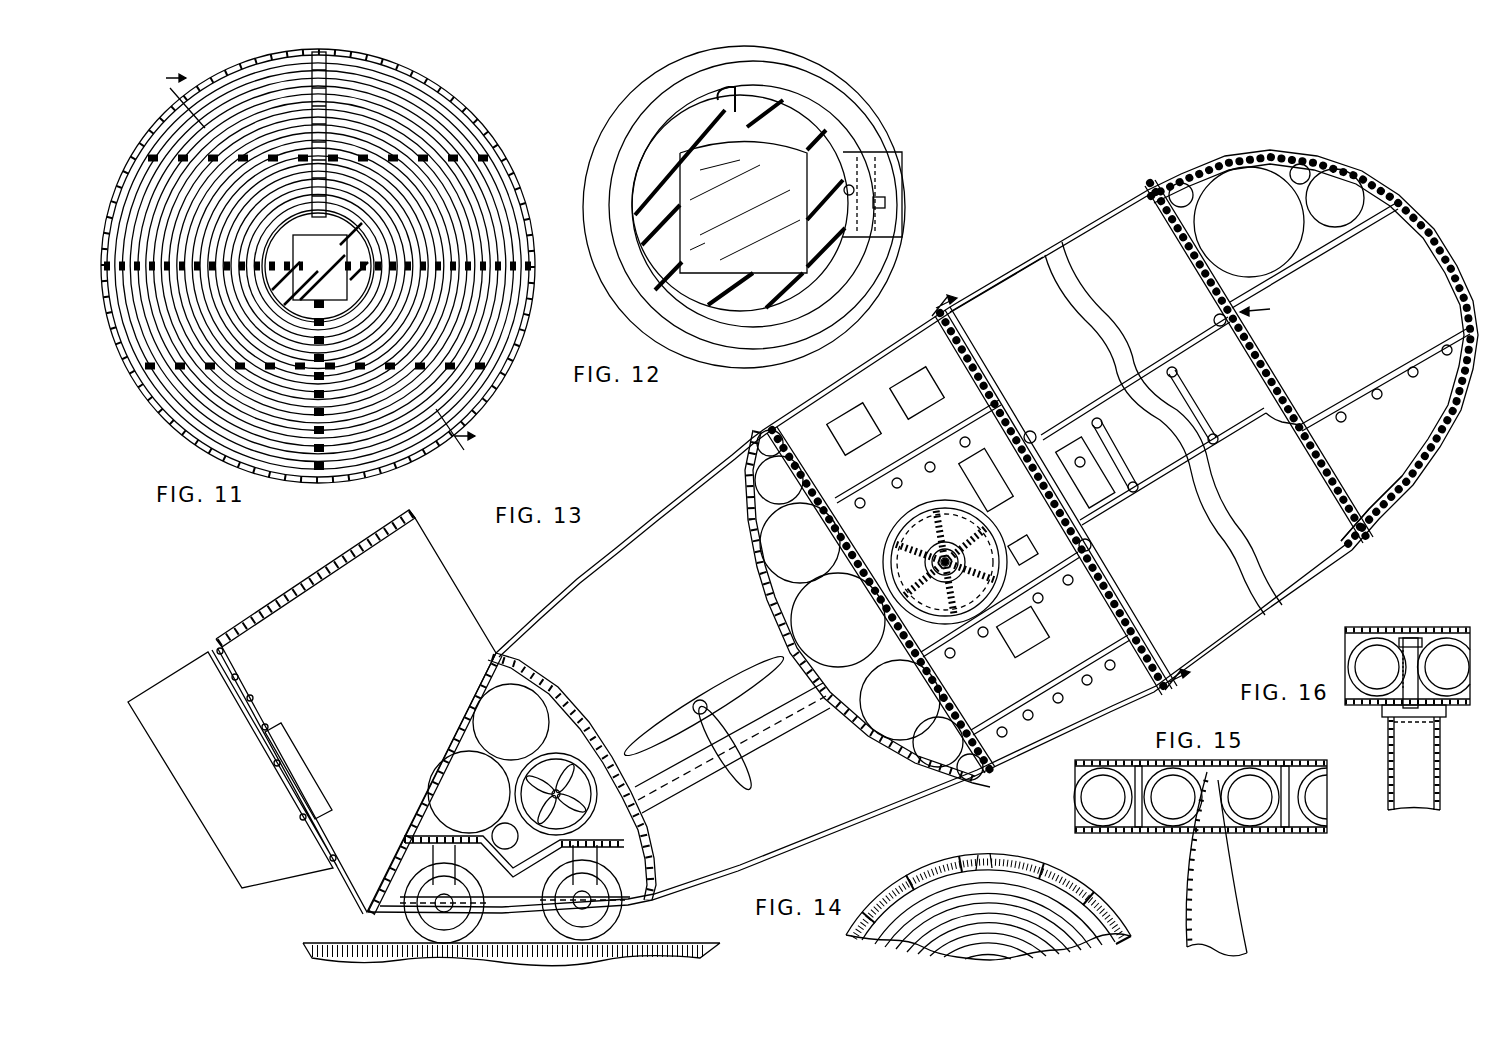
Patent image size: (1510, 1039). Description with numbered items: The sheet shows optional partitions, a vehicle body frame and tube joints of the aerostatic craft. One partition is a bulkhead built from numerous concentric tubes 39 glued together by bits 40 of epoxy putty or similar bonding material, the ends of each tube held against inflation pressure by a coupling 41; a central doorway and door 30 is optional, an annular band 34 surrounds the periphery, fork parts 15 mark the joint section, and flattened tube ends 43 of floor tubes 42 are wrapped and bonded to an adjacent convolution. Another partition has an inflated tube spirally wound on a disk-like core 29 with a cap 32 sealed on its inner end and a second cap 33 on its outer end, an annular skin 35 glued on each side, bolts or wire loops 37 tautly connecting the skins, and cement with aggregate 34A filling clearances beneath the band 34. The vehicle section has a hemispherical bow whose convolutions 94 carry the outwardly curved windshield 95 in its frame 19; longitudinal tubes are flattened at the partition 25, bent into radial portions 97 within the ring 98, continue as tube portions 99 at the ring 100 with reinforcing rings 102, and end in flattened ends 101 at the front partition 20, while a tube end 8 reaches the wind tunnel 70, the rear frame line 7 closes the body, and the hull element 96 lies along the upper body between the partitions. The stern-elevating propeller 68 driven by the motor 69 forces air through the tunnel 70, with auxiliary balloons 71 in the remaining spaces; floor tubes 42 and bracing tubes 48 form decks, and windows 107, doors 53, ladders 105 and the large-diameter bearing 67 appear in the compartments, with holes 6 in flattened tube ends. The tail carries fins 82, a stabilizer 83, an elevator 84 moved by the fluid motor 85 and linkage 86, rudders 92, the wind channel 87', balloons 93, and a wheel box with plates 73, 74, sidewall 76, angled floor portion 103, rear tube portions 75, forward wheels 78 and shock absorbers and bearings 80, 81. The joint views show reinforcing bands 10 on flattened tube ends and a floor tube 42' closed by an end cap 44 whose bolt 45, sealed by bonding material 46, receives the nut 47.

In FIG. 11, the annular band 34 is at (432, 82).
In FIG. 14, the annular band 34 is at (1062, 860).
In FIG. 11, the concentric tubes 39 is at (190, 425).
In FIG. 11, the coupling 41 is at (326, 62).
In FIG. 11, the doorway and door 30 is at (318, 266).
In FIG. 12, the doorway and door 30 is at (752, 250).
In FIG. 13, the doorway and door 30 is at (1090, 500).
In FIG. 11, the bits of bonding material 40 is at (150, 142).
In FIG. 11, the flattened tube ends 43 is at (462, 150).
In FIG. 11, the fork part 15 is at (336, 256).
In FIG. 12, the core 29 is at (852, 130).
In FIG. 12, the cap 32 is at (735, 87).
In FIG. 12, the annular skin 35 is at (900, 166).
In FIG. 12, the bolts or wire loops 37 is at (886, 203).
In FIG. 15, the bolts or wire loops 37 is at (1327, 788).
In FIG. 13, the tube end 8 is at (757, 428).
In FIG. 13, the windshield 95 is at (1458, 262).
In FIG. 13, the windshield frame 19 is at (1412, 228).
In FIG. 13, the convolutions 94 is at (1425, 500).
In FIG. 13, the upright plate 74 is at (640, 901).
In FIG. 13, the rear vehicle-frame line 7 is at (365, 912).
In FIG. 13, the rear portions of upper tubes 75 is at (398, 848).
In FIG. 13, the upright plate 73 is at (400, 836).
In FIG. 13, the balloons 93 is at (480, 801).
In FIG. 13, the wind channel 87' is at (511, 766).
In FIG. 13, the shock absorbers and bearings 80 is at (433, 858).
In FIG. 13, the angled portion 103 is at (573, 860).
In FIG. 13, the fore-and-aft sidewall 76 is at (520, 897).
In FIG. 13, the shock absorbers and bearings 81 is at (422, 910).
In FIG. 13, the forward wheels 78 is at (560, 915).
In FIG. 13, the tail fins 82 is at (374, 676).
In FIG. 13, the elevator 84 is at (312, 582).
In FIG. 13, the horizontal stabilizer 83 is at (402, 521).
In FIG. 13, the pivoted linkage 86 is at (246, 676).
In FIG. 13, the rudders 92 is at (228, 775).
In FIG. 13, the fluid motor 85 is at (300, 748).
In FIG. 13, the wind tunnel 70 is at (757, 572).
In FIG. 13, the auxiliary balloons 71 is at (850, 631).
In FIG. 13, the partition 25 is at (955, 347).
In FIG. 13, the radial portions 97 is at (972, 333).
In FIG. 13, the ring 98 is at (1033, 432).
In FIG. 13, the floor tubes 42 is at (1152, 469).
In FIG. 13, the transverse floor-bracing tubes 48 is at (902, 488).
In FIG. 13, the windows 107 is at (838, 412).
In FIG. 13, the doors 53 is at (997, 496).
In FIG. 13, the ladders 105 is at (1046, 634).
In FIG. 13, the bearing 67 is at (1000, 528).
In FIG. 13, the tube portions 99 is at (1168, 490).
In FIG. 13, the reinforcing rings 102 is at (1180, 372).
In FIG. 13, the flattened ends 101 is at (1152, 222).
In FIG. 13, the ring 100 is at (1213, 319).
In FIG. 13, the front partition 20 is at (1268, 309).
In FIG. 13, the hull hatch 96 is at (1116, 210).
In FIG. 13, the holes 6 is at (1066, 484).
In FIG. 13, the stern-elevating propeller 68 is at (672, 716).
In FIG. 13, the motor 69 is at (740, 790).
In FIG. 14, the cement with aggregate 34A is at (952, 860).
In FIG. 14, the second cap 33 is at (982, 853).
In FIG. 15, the bands 10 is at (1200, 796).
In FIG. 16, the bonding material 46 is at (1407, 666).
In FIG. 16, the nut 47 is at (1411, 637).
In FIG. 16, the end cap 44 is at (1446, 712).
In FIG. 16, the bolt 45 is at (1414, 734).
In FIG. 16, the floor tube 42' is at (1434, 763).